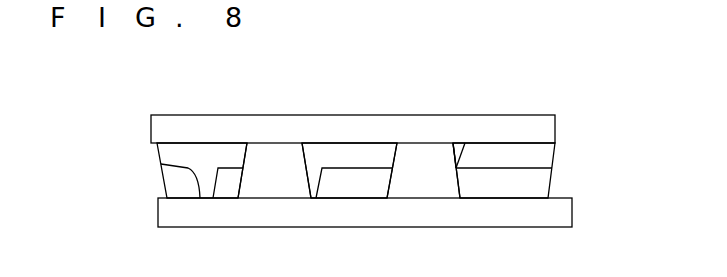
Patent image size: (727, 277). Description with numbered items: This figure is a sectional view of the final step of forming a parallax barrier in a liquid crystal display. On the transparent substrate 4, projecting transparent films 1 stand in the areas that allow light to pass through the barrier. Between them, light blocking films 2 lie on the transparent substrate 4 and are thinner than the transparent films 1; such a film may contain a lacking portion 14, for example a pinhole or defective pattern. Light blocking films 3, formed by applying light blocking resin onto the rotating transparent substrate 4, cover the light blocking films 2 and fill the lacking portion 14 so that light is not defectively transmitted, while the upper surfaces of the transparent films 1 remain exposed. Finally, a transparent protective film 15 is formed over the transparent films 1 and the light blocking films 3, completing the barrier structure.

The transparent film 1 is at (271, 162).
The light blocking film 2 is at (538, 185).
The light blocking film 3 is at (535, 155).
The transparent substrate 4 is at (565, 215).
The lacking portion 14 is at (457, 143).
The transparent protective film 15 is at (540, 132).